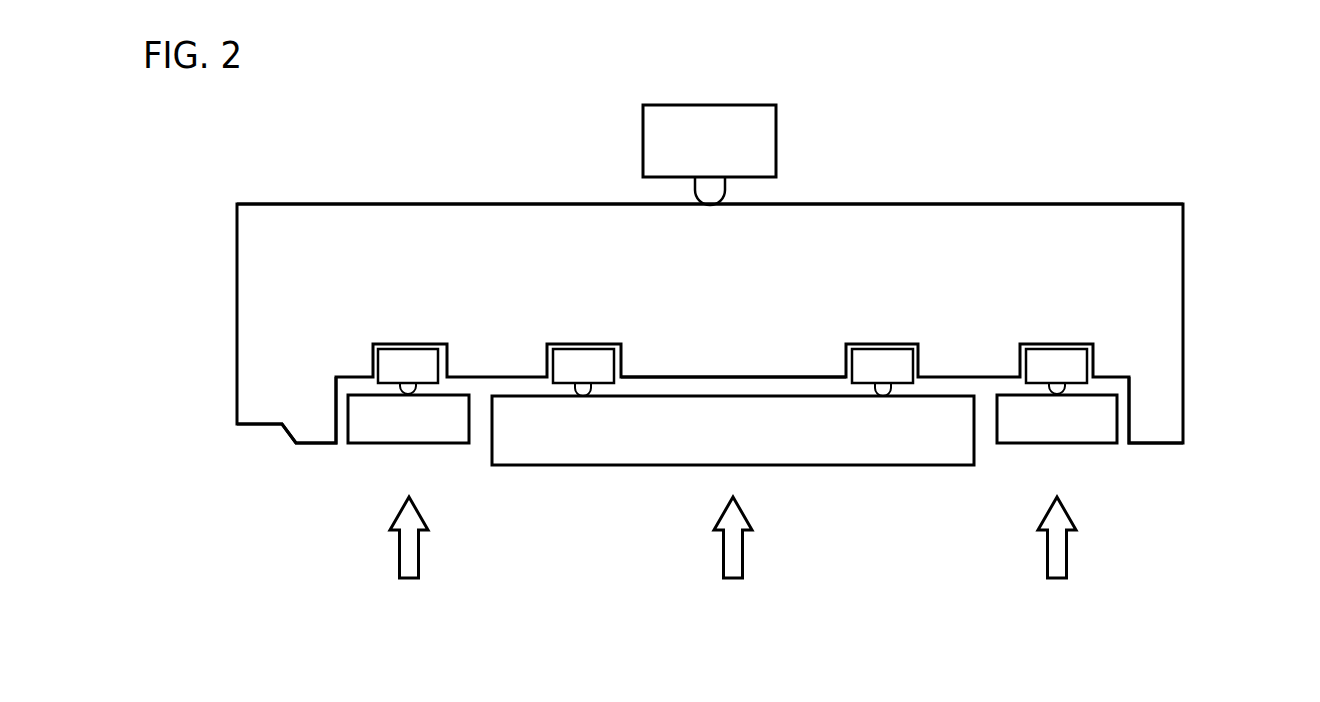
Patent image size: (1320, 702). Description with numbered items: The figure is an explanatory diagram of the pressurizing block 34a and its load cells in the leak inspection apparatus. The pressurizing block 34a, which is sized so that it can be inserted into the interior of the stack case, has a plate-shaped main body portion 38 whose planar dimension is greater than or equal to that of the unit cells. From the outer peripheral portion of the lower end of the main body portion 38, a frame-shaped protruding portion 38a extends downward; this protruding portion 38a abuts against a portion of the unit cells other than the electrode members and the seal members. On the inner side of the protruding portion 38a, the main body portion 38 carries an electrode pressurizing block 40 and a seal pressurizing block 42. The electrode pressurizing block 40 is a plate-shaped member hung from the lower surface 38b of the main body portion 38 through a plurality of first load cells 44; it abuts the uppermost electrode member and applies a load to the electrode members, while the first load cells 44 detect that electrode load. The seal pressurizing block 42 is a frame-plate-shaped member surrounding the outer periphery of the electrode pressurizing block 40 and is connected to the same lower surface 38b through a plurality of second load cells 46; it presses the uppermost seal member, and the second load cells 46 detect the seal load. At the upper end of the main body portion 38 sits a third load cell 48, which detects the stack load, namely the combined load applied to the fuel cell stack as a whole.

The pressurizing block 34a is at (1140, 194).
The main body portion 38 is at (1168, 290).
The protruding portion 38a is at (1160, 405).
The lower surface 38b is at (700, 380).
The electrode pressurizing block 40 is at (651, 450).
The seal pressurizing block 42 is at (385, 430).
The first load cells 44 is at (579, 363).
The second load cells 46 is at (404, 363).
The third load cell 48 is at (703, 122).